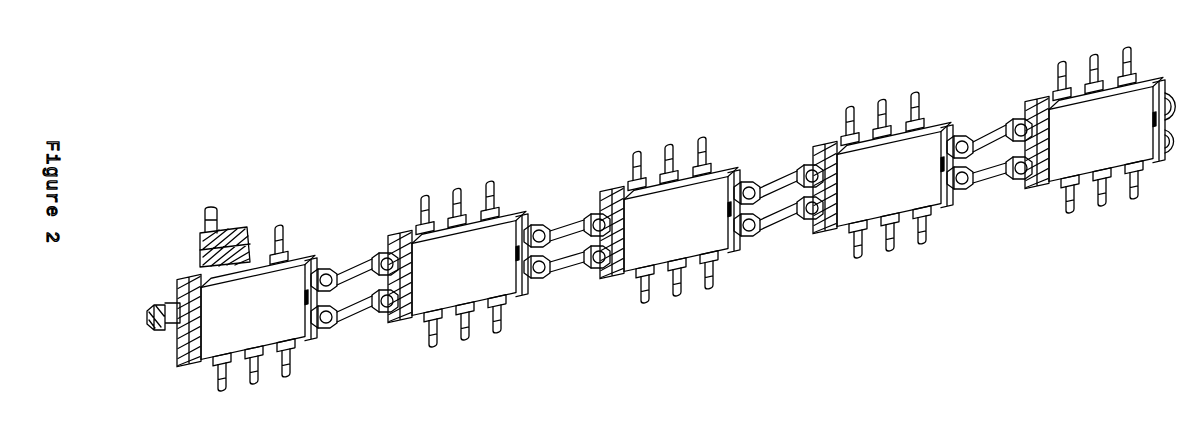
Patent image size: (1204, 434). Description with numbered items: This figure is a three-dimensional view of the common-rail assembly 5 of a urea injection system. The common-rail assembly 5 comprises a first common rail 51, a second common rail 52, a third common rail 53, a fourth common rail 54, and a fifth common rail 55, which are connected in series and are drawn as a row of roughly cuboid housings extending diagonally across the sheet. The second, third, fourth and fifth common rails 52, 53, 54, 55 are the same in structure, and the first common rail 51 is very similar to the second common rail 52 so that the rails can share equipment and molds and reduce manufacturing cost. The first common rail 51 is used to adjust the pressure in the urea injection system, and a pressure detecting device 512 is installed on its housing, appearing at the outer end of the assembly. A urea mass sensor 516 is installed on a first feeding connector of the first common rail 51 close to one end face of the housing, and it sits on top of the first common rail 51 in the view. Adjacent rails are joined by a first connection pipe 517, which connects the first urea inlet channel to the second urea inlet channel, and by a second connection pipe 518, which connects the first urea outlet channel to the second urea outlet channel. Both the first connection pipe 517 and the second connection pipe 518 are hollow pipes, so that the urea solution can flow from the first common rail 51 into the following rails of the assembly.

The common-rail assembly 5 is at (634, 66).
The first common rail 51 is at (288, 320).
The second common rail 52 is at (505, 275).
The third common rail 53 is at (717, 232).
The fourth common rail 54 is at (927, 187).
The fifth common rail 55 is at (1128, 142).
The pressure detecting device 512 is at (170, 310).
The urea mass sensor 516 is at (203, 238).
The first connection pipe 517 is at (358, 275).
The second connection pipe 518 is at (358, 308).